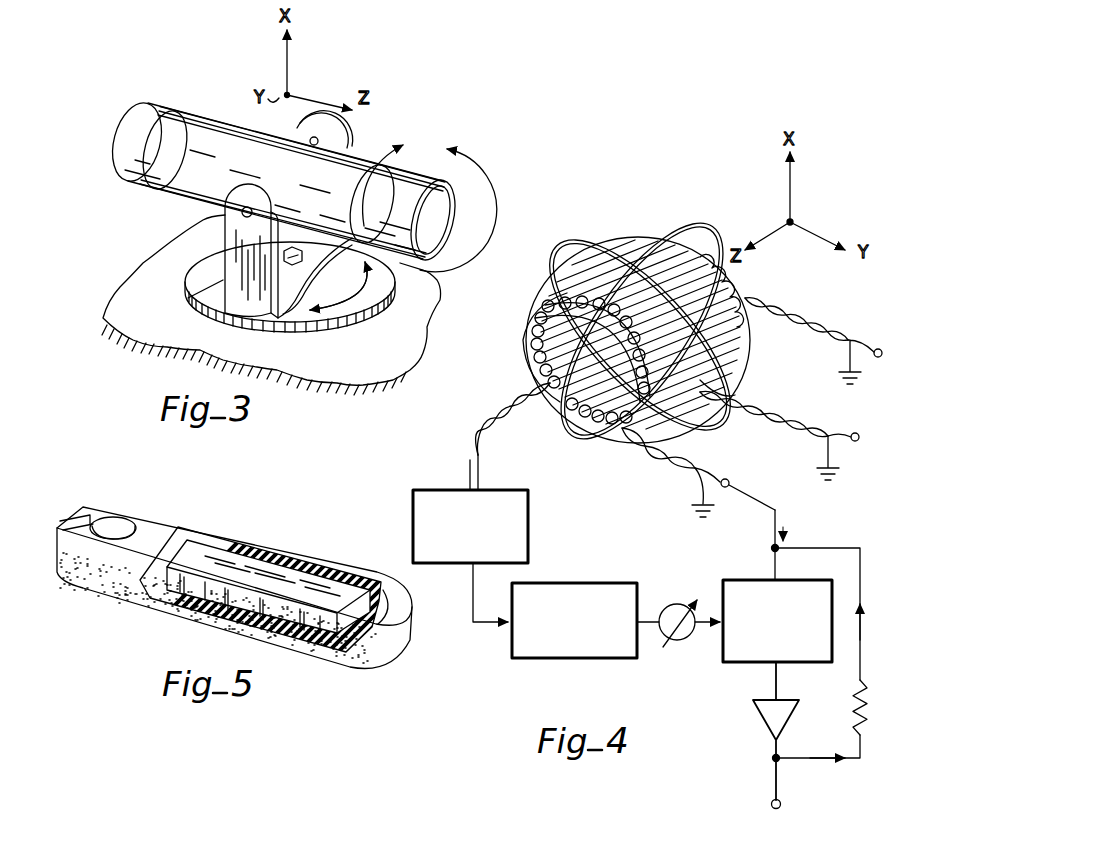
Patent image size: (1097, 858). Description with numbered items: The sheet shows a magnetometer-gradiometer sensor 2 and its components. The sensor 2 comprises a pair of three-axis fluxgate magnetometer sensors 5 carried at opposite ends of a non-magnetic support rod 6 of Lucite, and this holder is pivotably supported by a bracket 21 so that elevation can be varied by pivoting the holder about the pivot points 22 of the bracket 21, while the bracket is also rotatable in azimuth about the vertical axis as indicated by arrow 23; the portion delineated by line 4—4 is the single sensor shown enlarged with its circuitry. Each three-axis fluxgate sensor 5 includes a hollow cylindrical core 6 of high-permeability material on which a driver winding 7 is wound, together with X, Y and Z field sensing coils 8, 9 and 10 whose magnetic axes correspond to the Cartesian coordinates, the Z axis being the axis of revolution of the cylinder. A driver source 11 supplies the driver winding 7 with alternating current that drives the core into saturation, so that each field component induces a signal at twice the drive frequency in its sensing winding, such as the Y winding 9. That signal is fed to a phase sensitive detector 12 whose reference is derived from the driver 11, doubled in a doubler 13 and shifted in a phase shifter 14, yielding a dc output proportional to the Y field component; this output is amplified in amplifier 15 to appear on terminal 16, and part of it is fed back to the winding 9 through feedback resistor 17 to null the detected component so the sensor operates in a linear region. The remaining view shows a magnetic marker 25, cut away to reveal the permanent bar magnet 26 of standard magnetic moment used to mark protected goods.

In FIG. 3, the magnetometer-gradiometer sensor 2 is at (122, 98).
In FIG. 3, the line 4— 4 is at (430, 198).
In FIG. 3, the three-axis fluxgate magnetometer sensor 5 is at (123, 130).
In FIG. 4, the three-axis fluxgate magnetometer sensor 5 is at (605, 232).
In FIG. 3, the support rod / cylindrical core 6 is at (221, 118).
In FIG. 4, the support rod / cylindrical core 6 is at (730, 292).
In FIG. 4, the driver winding 7 is at (560, 295).
In FIG. 4, the X field sensing coil 8 is at (520, 330).
In FIG. 4, the Y field sensing coil 9 is at (640, 240).
In FIG. 4, the Z field sensing coil 10 is at (720, 390).
In FIG. 4, the driver source 11 is at (510, 489).
In FIG. 4, the phase sensitive detector 12 is at (762, 580).
In FIG. 4, the doubler 13 is at (603, 583).
In FIG. 4, the phase shifter 14 is at (678, 604).
In FIG. 4, the amplifier 15 is at (766, 718).
In FIG. 4, the output terminal 16 is at (772, 806).
In FIG. 4, the feedback resistor 17 is at (855, 702).
In FIG. 3, the bracket 21 is at (186, 297).
In FIG. 3, the pivot points 22 is at (247, 206).
In FIG. 3, the arrow 23 is at (343, 300).
In FIG. 5, the magnetic marker 25 is at (338, 553).
In FIG. 5, the permanent bar magnet 26 is at (235, 555).